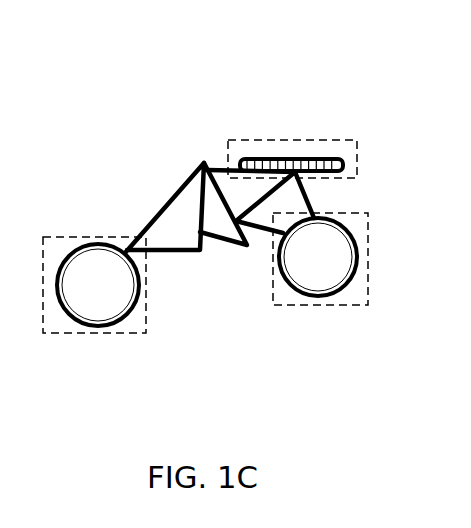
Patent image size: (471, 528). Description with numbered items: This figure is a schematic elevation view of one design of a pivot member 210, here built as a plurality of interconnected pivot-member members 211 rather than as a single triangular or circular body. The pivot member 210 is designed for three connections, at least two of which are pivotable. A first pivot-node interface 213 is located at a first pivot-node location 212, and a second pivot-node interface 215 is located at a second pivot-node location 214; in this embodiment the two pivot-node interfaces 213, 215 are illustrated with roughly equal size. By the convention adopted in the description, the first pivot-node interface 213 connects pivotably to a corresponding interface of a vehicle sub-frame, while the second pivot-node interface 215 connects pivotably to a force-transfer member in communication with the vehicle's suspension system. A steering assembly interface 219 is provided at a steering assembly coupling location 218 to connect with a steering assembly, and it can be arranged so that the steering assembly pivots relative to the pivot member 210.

The pivot member 210 is at (108, 94).
The pivot-member members 211 is at (170, 192).
The first pivot-node location 212 is at (78, 335).
The first pivot-node interface 213 is at (67, 249).
The second pivot-node location 214 is at (342, 308).
The second pivot-node interface 215 is at (296, 300).
The steering assembly coupling location 218 is at (265, 140).
The steering assembly interface 219 is at (329, 152).